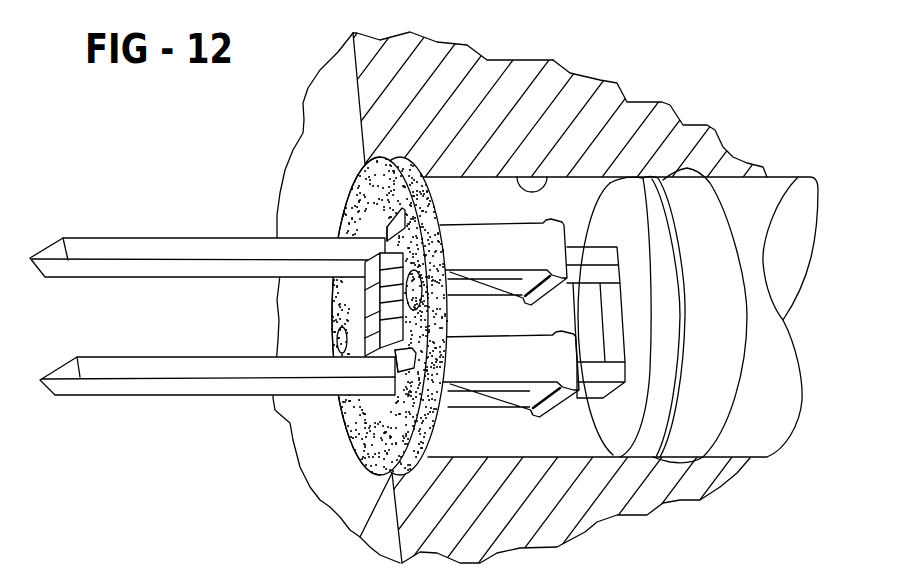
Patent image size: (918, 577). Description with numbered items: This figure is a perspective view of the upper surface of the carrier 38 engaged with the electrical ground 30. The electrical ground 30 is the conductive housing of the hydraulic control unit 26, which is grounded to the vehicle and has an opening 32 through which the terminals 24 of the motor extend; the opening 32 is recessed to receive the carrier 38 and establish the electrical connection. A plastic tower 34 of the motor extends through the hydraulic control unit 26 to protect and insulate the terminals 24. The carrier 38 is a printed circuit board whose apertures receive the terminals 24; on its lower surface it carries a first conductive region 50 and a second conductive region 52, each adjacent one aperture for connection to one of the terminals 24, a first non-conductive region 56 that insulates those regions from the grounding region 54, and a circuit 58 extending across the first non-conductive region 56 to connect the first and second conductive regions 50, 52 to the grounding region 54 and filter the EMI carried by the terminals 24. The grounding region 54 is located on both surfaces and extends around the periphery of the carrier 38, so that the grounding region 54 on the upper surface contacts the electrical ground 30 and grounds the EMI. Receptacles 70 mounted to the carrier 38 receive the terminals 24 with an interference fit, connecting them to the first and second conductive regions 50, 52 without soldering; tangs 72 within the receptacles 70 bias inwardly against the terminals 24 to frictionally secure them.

The terminals 24 is at (63, 368).
The hydraulic control unit 26 is at (490, 78).
The electrical ground 30 is at (336, 79).
The opening 32 is at (558, 122).
The plastic tower 34 is at (747, 188).
The carrier 38 is at (360, 540).
The first conductive region 50 is at (340, 422).
The second conductive region 52 is at (388, 230).
The grounding region 54 is at (357, 327).
The first non-conductive region 56 is at (370, 200).
The circuit 58 is at (356, 308).
The receptacles 70 is at (510, 256).
The tangs 72 is at (503, 280).